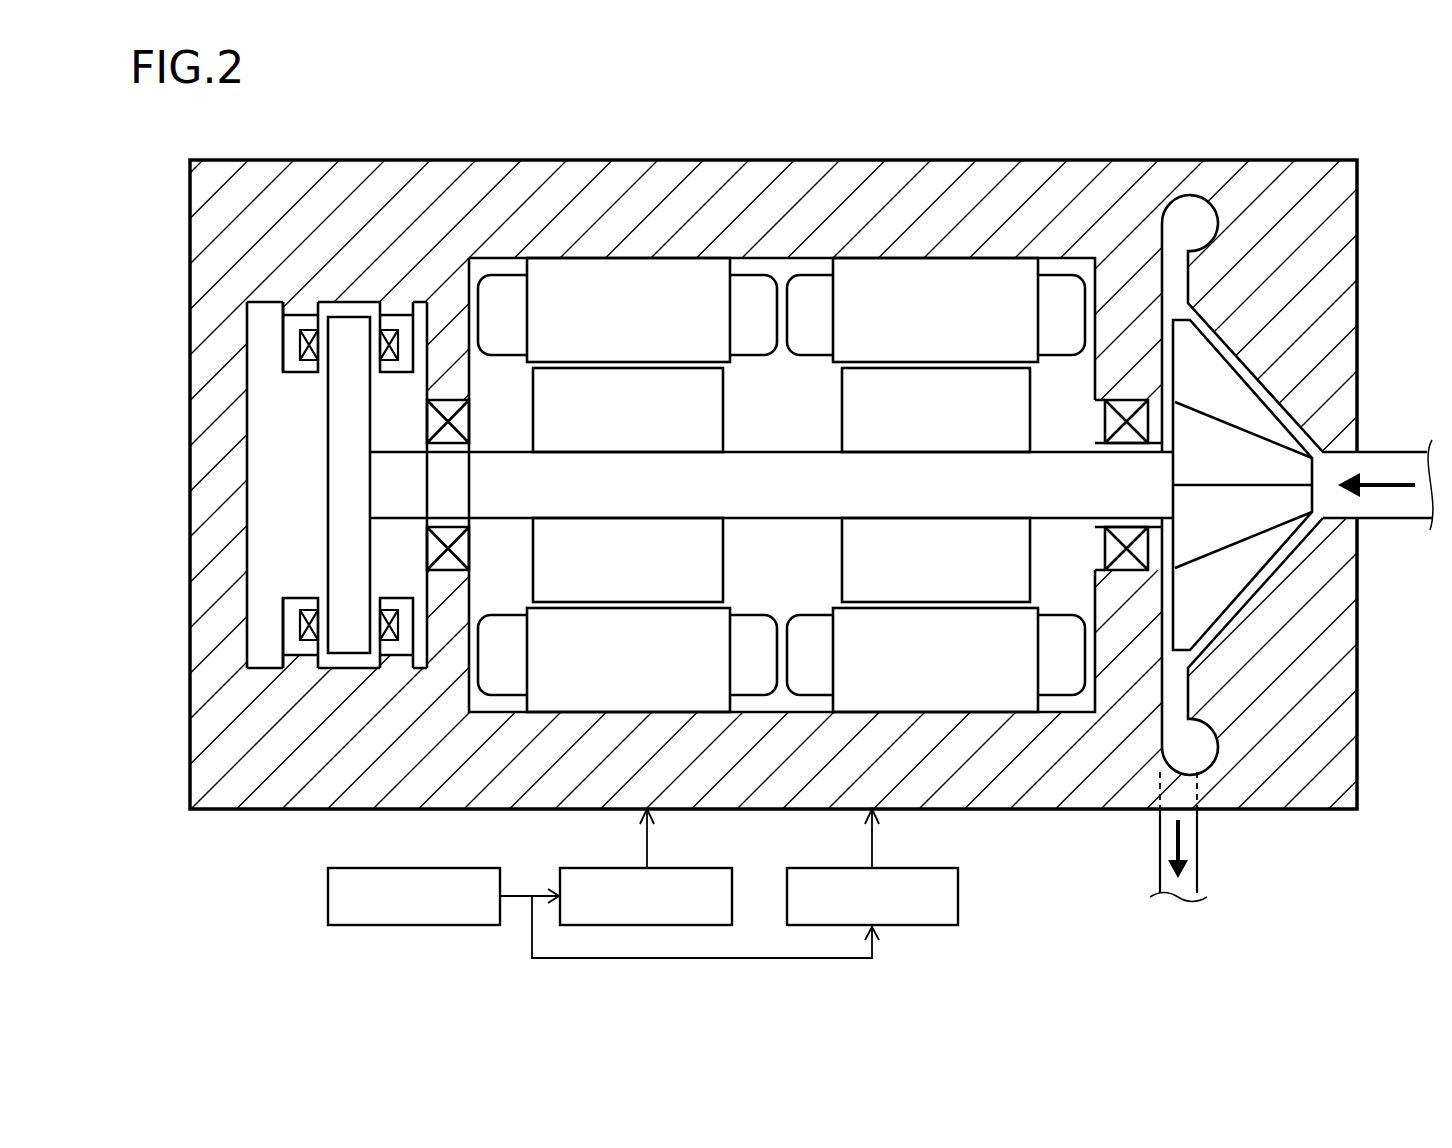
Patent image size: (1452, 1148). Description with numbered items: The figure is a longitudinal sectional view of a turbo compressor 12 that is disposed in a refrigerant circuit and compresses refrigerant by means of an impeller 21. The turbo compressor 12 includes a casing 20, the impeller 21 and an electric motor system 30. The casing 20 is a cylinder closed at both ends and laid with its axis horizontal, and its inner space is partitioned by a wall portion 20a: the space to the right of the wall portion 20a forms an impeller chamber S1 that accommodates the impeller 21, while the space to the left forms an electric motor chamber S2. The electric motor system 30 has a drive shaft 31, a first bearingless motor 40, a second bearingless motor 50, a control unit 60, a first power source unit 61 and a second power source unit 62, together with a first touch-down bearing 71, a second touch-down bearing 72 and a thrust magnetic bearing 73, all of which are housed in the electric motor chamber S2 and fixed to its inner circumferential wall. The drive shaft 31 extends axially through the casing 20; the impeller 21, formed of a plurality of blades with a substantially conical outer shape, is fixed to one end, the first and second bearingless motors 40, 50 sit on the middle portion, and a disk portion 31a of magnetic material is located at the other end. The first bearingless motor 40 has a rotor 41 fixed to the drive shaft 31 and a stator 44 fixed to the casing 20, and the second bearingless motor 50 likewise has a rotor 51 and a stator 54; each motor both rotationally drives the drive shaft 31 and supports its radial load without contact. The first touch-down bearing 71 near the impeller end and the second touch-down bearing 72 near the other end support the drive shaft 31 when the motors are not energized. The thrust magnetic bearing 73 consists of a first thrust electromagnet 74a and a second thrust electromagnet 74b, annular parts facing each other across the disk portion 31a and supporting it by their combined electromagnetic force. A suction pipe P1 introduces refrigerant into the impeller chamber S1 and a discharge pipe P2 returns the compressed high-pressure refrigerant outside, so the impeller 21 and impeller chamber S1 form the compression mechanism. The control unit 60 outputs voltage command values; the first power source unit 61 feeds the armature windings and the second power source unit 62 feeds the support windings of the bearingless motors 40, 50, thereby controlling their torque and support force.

The turbo compressor 12 is at (1336, 128).
The casing 20 is at (764, 158).
The wall portion 20a is at (1127, 670).
The impeller 21 is at (1242, 560).
The electric motor system 30 is at (847, 147).
The drive shaft 31 is at (778, 503).
The disk portion 31a is at (345, 481).
The first bearingless motor 40 is at (952, 255).
The rotor 41 is at (1020, 418).
The stator 44 is at (895, 278).
The second bearingless motor 50 is at (590, 250).
The rotor 51 is at (548, 417).
The stator 54 is at (678, 278).
The control unit 60 is at (416, 868).
The first power source unit 61 is at (596, 868).
The second power source unit 62 is at (818, 868).
The first touch-down bearing 71 is at (1125, 410).
The second touch-down bearing 72 is at (448, 408).
The thrust magnetic bearing 73 is at (280, 340).
The first thrust electromagnet 74a is at (397, 323).
The second thrust electromagnet 74b is at (295, 323).
The suction pipe P1 is at (1412, 502).
The discharge pipe P2 is at (1198, 839).
The impeller chamber S1 is at (1265, 392).
The electric motor chamber S2 is at (1056, 265).